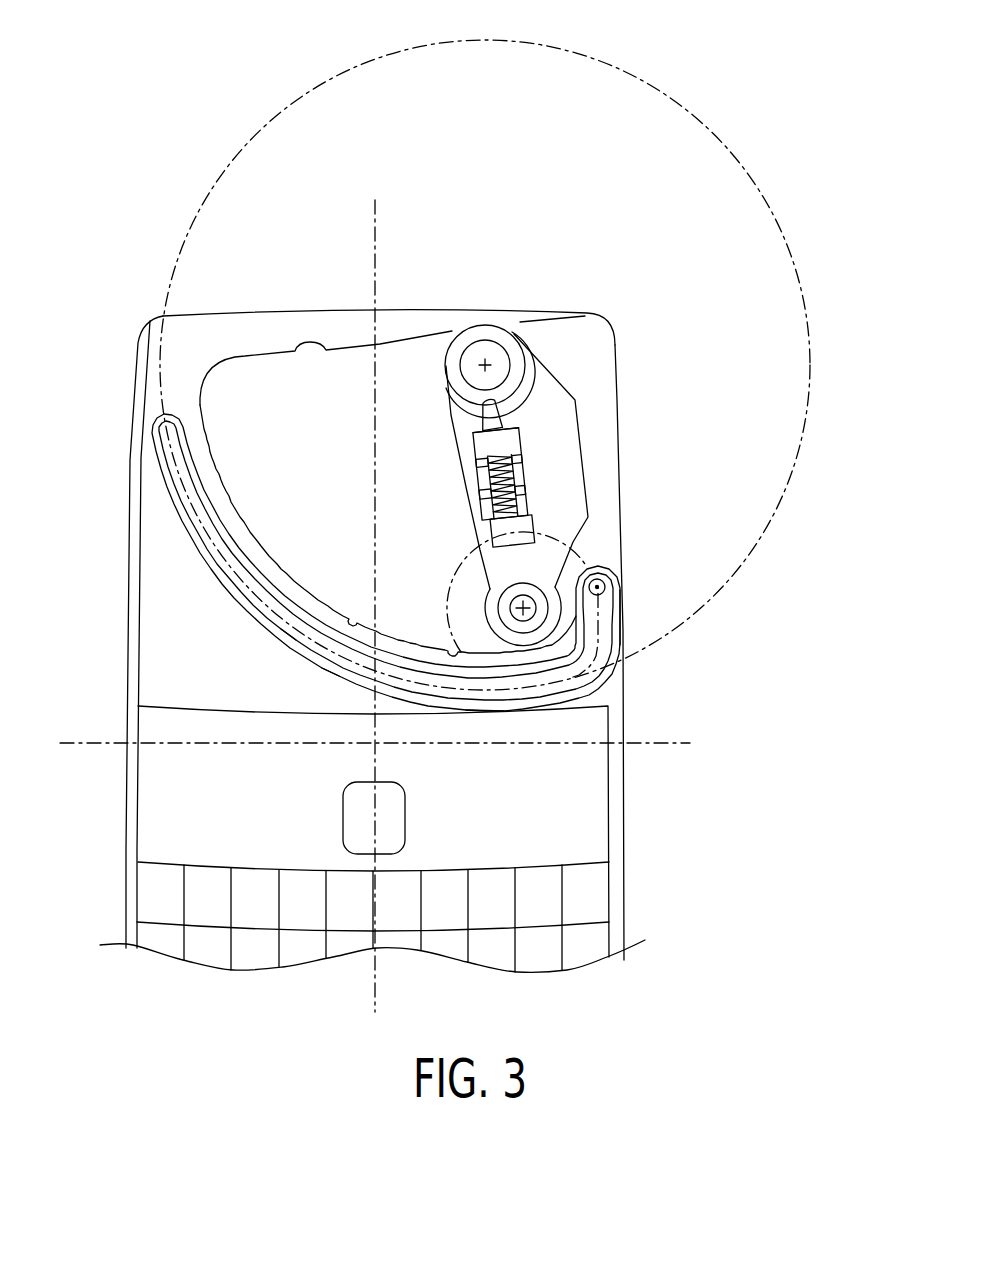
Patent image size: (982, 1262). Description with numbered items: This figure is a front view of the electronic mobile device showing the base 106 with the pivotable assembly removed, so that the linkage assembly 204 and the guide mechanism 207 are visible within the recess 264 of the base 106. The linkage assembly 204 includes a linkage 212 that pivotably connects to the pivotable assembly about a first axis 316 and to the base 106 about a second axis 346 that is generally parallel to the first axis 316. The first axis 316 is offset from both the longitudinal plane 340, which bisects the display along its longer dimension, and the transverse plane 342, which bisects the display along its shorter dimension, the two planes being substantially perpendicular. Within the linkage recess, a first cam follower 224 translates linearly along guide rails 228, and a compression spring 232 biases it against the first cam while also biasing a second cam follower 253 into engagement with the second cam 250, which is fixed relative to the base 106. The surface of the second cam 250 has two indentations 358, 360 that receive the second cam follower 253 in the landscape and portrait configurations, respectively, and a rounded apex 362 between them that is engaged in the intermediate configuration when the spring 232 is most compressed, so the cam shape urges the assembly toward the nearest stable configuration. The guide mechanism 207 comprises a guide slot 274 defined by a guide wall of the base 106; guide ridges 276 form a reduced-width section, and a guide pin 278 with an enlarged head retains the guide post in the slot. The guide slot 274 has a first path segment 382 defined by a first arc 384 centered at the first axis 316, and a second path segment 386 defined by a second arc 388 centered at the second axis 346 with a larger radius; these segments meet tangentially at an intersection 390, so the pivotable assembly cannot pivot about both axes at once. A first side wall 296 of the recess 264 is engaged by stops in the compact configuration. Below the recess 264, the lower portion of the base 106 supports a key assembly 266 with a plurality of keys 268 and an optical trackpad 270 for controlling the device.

The base 106 is at (579, 192).
The linkage assembly 204 is at (597, 418).
The guide mechanism 207 is at (645, 607).
The linkage 212 is at (588, 462).
The first cam follower 224 is at (590, 496).
The guide rails 228 is at (488, 520).
The compression spring 232 is at (491, 487).
The second cam 250 is at (515, 333).
The second cam follower 253 is at (479, 452).
The recess 264 is at (288, 390).
The key assembly 266 is at (619, 906).
The keys 268 is at (600, 862).
The optical trackpad 270 is at (345, 826).
The guide slot 274 is at (291, 632).
The guide ridges 276 is at (328, 654).
The guide pin 278 is at (613, 587).
The first side wall 296 is at (273, 557).
The first axis 316 is at (516, 601).
The longitudinal plane 340 is at (376, 258).
The transverse plane 342 is at (654, 744).
The second axis 346 is at (476, 374).
The indentation 358 is at (581, 428).
The indentation 360 is at (446, 366).
The rounded apex 362 is at (466, 418).
The first path segment 382 is at (612, 655).
The first arc 384 is at (586, 663).
The second path segment 386 is at (243, 584).
The second arc 388 is at (221, 553).
The intersection 390 is at (532, 683).